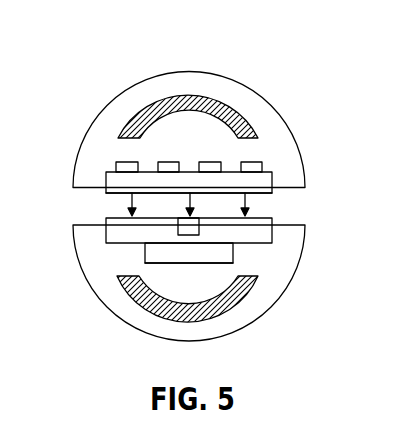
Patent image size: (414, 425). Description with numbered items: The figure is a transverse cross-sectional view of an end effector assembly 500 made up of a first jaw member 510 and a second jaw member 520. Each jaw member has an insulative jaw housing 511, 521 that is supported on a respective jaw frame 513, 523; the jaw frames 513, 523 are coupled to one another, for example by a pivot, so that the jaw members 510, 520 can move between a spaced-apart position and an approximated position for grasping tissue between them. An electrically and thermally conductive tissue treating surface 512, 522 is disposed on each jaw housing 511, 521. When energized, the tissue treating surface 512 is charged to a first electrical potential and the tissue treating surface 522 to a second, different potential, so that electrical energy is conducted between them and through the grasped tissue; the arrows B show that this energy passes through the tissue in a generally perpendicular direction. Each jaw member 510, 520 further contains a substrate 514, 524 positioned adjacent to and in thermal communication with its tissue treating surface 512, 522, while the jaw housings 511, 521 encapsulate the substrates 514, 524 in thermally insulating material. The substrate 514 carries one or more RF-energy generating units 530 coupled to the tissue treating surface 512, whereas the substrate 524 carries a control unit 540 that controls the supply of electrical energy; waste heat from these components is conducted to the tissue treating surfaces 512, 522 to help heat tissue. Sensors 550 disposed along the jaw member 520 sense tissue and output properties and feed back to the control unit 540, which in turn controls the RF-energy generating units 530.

The end effector assembly 500 is at (320, 46).
The first jaw member 510 is at (215, 64).
The jaw housing 511 is at (247, 97).
The tissue treating surface 512 is at (117, 198).
The jaw frame 513 is at (140, 120).
The substrate 514 is at (263, 180).
The RF-energy generating units 530 is at (128, 162).
The second jaw member 520 is at (260, 325).
The jaw housing 521 is at (275, 265).
The tissue treating surface 522 is at (258, 214).
The jaw frame 523 is at (140, 290).
The substrate 524 is at (262, 233).
The control unit 540 is at (188, 252).
The sensors 550 is at (187, 229).
The arrows B is at (123, 199).